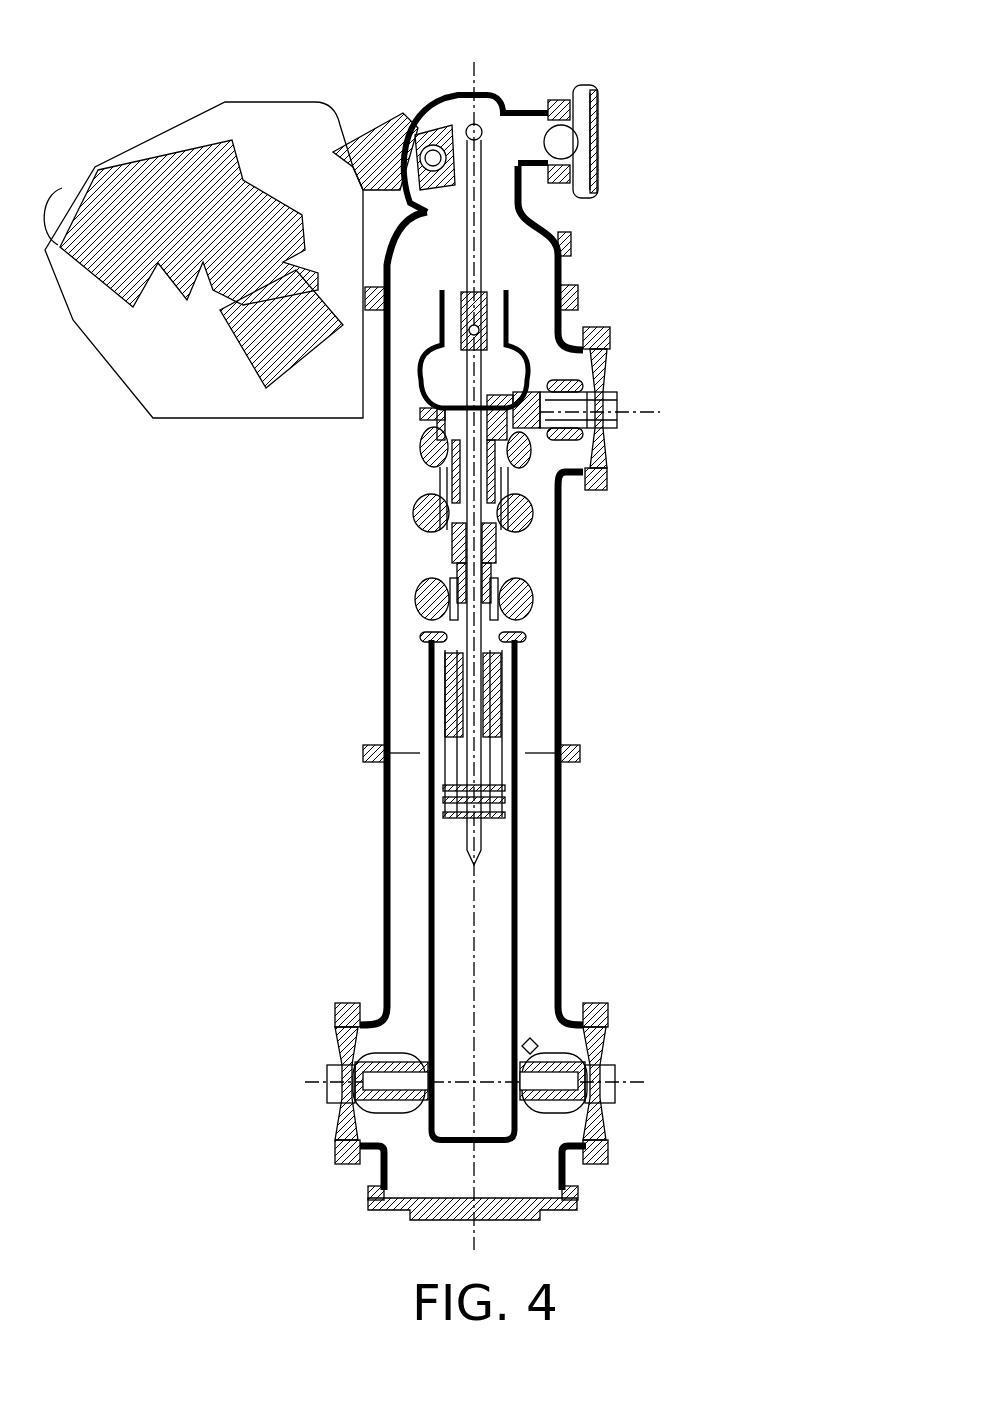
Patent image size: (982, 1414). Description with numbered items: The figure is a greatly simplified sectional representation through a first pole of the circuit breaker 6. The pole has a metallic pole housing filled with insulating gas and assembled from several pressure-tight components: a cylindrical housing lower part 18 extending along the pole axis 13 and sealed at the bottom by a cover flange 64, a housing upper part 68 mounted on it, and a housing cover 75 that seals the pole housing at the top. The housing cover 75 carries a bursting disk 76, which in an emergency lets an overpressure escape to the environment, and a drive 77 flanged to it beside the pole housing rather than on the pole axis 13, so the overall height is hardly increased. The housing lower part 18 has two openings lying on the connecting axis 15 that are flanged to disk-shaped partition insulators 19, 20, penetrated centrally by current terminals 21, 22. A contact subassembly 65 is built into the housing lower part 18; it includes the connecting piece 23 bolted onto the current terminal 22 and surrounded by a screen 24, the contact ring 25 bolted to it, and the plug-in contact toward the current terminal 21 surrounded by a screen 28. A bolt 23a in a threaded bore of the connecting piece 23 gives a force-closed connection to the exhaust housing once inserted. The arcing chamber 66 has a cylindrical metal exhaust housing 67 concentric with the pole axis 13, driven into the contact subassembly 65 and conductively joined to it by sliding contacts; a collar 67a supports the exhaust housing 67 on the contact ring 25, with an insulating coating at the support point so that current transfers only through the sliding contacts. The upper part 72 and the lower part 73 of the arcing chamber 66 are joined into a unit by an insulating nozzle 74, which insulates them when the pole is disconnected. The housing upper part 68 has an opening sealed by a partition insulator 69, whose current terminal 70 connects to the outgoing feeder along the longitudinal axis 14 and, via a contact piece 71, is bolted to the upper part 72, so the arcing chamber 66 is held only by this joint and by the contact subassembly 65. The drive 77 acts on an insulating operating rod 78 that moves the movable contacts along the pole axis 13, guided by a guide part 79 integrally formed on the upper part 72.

The circuit breaker 6 is at (584, 557).
The pole axis 13 is at (474, 76).
The longitudinal axis 14 is at (650, 420).
The connecting axis 15 is at (636, 1080).
The housing lower part 18 is at (384, 907).
The partition insulator 19 is at (333, 1050).
The partition insulator 20 is at (610, 1118).
The current terminal 21 is at (340, 1092).
The current terminal 22 is at (606, 1073).
The connecting piece 23 is at (559, 1107).
The bolt 23a is at (534, 1040).
The screen 24 is at (570, 1054).
The contact ring 25 is at (552, 1210).
The screen 28 is at (367, 1038).
The cover flange 64 is at (397, 1213).
The contact subassembly 65 is at (333, 1112).
The arcing chamber 66 is at (546, 601).
The exhaust housing 67 is at (428, 822).
The collar 67a is at (382, 1005).
The housing upper part 68 is at (383, 683).
The partition insulator 69 is at (612, 452).
The current terminal 70 is at (613, 393).
The contact piece 71 is at (607, 380).
The upper part 72 is at (423, 468).
The lower part 73 is at (417, 603).
The insulating nozzle 74 is at (455, 557).
The housing cover 75 is at (530, 108).
The bursting disk 76 is at (576, 132).
The drive 77 is at (205, 195).
The insulating operating rod 78 is at (424, 148).
The guide part 79 is at (512, 294).